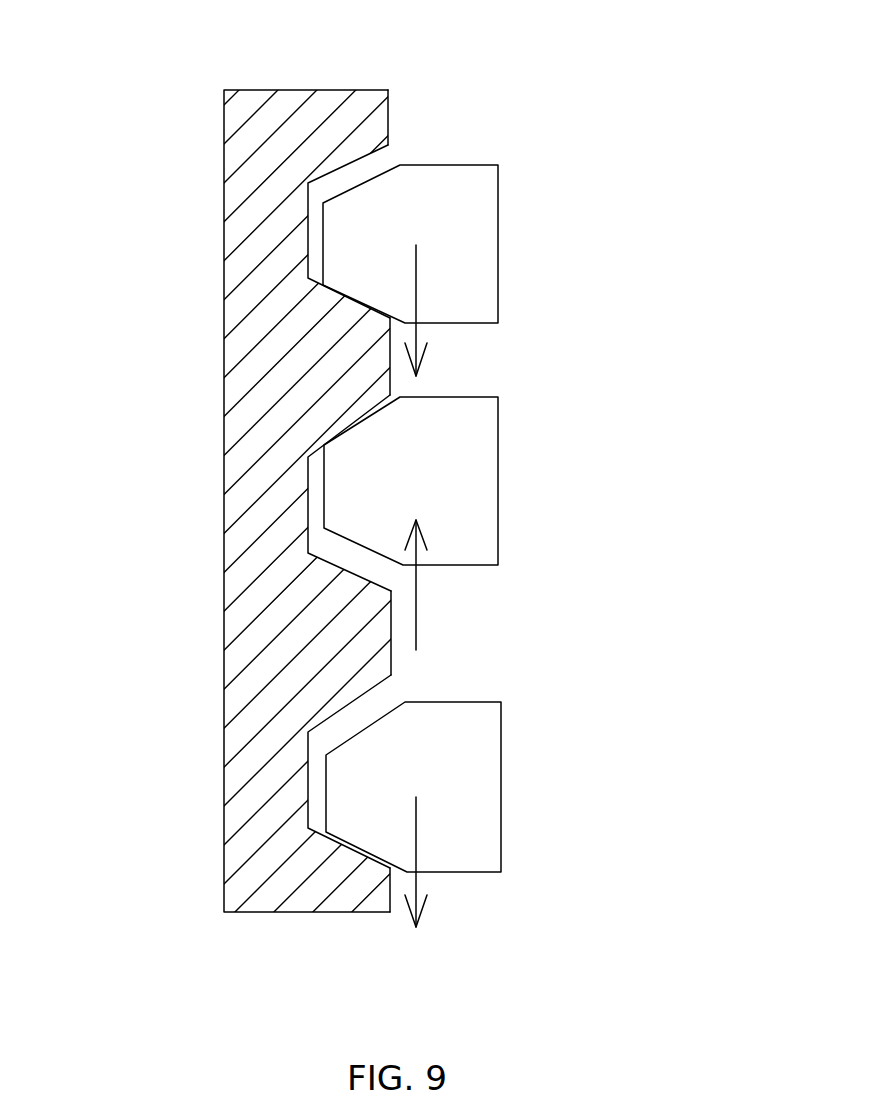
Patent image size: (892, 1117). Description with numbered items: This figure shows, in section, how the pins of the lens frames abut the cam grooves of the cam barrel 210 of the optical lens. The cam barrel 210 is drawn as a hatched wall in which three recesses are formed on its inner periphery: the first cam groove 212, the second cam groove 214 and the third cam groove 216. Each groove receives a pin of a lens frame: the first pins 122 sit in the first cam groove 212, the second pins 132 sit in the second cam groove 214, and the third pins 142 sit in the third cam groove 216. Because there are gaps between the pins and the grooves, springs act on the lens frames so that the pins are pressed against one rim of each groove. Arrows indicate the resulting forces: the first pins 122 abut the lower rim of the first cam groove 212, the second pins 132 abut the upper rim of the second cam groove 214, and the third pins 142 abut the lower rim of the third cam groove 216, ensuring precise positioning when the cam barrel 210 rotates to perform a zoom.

The cam barrel 210 is at (260, 862).
The first cam groove 212 is at (382, 740).
The second cam groove 214 is at (347, 433).
The third cam groove 216 is at (347, 167).
The first pins 122 is at (432, 735).
The second pins 132 is at (437, 457).
The third pins 142 is at (437, 197).